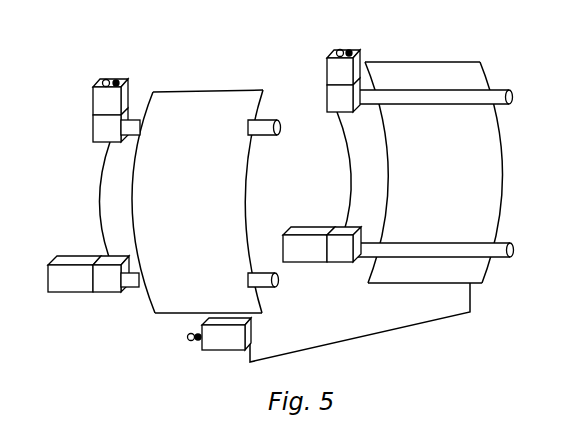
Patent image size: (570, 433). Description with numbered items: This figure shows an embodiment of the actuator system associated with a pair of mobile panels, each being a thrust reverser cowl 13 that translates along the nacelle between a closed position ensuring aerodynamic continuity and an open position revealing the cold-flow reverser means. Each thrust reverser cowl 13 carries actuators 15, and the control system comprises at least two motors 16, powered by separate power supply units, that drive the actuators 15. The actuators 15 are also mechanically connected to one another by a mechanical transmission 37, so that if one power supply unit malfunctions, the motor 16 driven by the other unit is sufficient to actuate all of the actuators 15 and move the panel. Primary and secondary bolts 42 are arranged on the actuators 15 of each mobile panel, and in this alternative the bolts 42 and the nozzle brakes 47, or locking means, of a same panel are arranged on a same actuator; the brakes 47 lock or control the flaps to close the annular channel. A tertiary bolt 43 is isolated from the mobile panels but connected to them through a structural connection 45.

The thrust reverser cowl 13 is at (197, 210).
The actuator 15 is at (263, 122).
The motor 16 is at (227, 185).
The mechanical transmission 37 is at (100, 209).
The primary and secondary bolts 42 is at (191, 259).
The tertiary bolt 43 is at (220, 334).
The structural connection 45 is at (355, 338).
The locking means (secondary nozzle brake) 47 is at (226, 83).